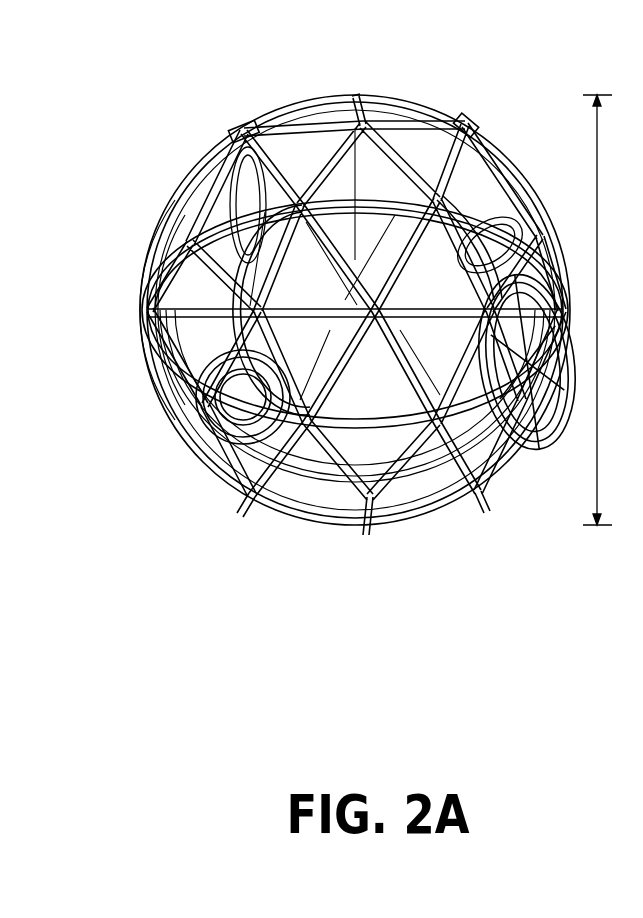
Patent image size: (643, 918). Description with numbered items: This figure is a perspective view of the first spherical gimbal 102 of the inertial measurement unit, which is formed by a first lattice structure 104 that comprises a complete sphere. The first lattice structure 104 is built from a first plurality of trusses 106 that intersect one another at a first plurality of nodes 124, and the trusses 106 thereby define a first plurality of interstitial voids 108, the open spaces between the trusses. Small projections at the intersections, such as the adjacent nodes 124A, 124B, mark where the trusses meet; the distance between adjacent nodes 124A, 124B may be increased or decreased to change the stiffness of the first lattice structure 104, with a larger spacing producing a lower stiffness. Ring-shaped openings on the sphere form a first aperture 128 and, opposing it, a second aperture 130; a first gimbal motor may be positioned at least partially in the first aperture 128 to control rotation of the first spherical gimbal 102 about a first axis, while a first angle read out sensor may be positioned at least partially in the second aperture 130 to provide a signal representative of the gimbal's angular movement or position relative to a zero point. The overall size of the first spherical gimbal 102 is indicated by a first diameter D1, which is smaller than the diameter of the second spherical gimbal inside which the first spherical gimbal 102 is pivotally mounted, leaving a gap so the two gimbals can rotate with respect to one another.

The first spherical gimbal 102 is at (115, 159).
The first lattice structure 104 is at (141, 307).
The first plurality of trusses 106 is at (413, 104).
The first plurality of interstitial voids 108 is at (295, 152).
The first plurality of nodes 124 is at (243, 517).
The adjacent node 124A is at (358, 95).
The adjacent node 124B is at (469, 124).
The first aperture 128 is at (234, 200).
The second aperture 130 is at (539, 421).
The first diameter D1 is at (607, 310).